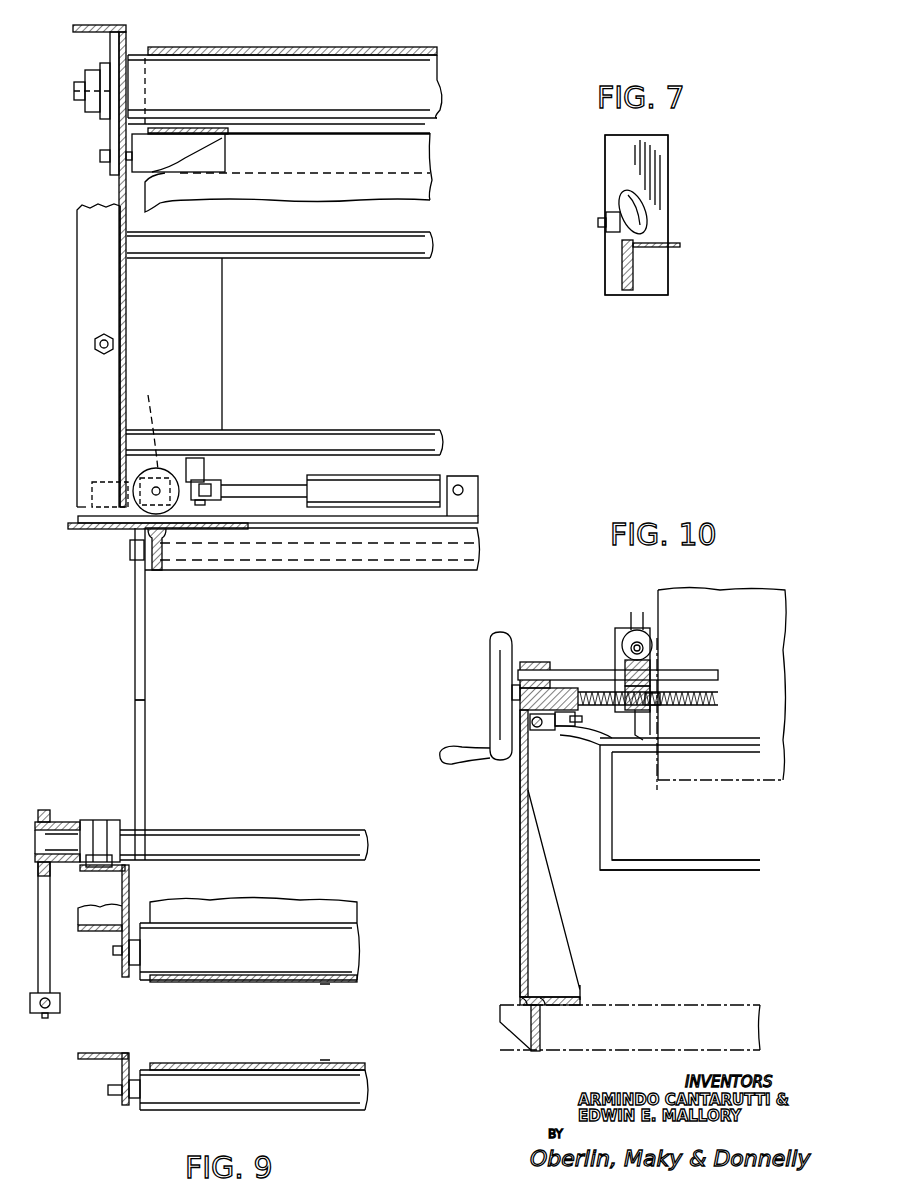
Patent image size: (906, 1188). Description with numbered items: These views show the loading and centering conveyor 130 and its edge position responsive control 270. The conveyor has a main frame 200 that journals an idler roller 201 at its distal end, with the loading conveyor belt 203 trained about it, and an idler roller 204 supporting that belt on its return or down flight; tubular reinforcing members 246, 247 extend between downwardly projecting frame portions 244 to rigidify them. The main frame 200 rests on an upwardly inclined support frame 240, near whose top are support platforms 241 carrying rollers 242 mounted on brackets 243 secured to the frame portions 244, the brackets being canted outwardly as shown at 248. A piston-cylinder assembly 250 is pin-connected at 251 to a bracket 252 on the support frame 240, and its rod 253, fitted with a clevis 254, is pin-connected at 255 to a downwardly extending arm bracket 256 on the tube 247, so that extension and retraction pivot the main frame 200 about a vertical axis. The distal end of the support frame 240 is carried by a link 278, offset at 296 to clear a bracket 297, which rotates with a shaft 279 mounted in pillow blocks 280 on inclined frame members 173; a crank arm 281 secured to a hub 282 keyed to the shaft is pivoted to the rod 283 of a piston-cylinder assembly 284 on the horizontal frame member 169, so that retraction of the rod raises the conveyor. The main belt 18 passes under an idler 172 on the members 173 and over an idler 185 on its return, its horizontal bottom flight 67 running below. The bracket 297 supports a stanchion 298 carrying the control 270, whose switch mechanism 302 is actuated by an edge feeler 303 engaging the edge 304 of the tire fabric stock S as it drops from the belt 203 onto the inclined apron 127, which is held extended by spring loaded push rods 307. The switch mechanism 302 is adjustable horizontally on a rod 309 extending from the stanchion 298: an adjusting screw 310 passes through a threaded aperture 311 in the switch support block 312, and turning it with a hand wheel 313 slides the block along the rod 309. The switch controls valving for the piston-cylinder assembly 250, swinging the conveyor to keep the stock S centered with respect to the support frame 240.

In FIG. 9, the loading conveyor 130 is at (57, 318).
In FIG. 10, the loading conveyor 130 is at (500, 812).
In FIG. 9, the main frame 200 is at (140, 36).
In FIG. 9, the idler roller 201 is at (437, 70).
In FIG. 9, the loading conveyor belt 203 is at (418, 186).
In FIG. 9, the idler roller 204 is at (200, 145).
In FIG. 9, the tubular reinforcing member 246 is at (375, 260).
In FIG. 9, the tubular reinforcing member 247 is at (412, 430).
In FIG. 9, the support platform 241 is at (102, 530).
In FIG. 7, the support platform 241 is at (668, 186).
In FIG. 9, the roller 242 is at (143, 485).
In FIG. 7, the roller 242 is at (642, 232).
In FIG. 9, the bracket 243 is at (105, 492).
In FIG. 7, the bracket 243 is at (620, 260).
In FIG. 9, the downwardly projecting frame portion 244 is at (84, 418).
In FIG. 7, the downwardly projecting frame portion 244 is at (635, 290).
In FIG. 9, the outward cant 248 is at (154, 421).
In FIG. 7, the outward cant 248 is at (612, 212).
In FIG. 9, the piston-cylinder assembly 250 is at (430, 473).
In FIG. 9, the pin connection 251 is at (464, 489).
In FIG. 9, the bracket 252 is at (470, 512).
In FIG. 9, the rod 253 is at (278, 488).
In FIG. 9, the clevis 254 is at (215, 500).
In FIG. 9, the pin connection 255 is at (210, 480).
In FIG. 9, the arm bracket 256 is at (203, 458).
In FIG. 9, the bracket 297 is at (163, 555).
In FIG. 10, the bracket 297 is at (545, 1032).
In FIG. 9, the support frame 240 is at (212, 572).
In FIG. 10, the support frame 240 is at (613, 1050).
In FIG. 9, the link 278 is at (152, 685).
In FIG. 9, the offset 296 is at (136, 712).
In FIG. 9, the shaft 279 is at (266, 830).
In FIG. 9, the pillow block 280 is at (112, 820).
In FIG. 9, the hub 282 is at (66, 822).
In FIG. 9, the crank arm 281 is at (50, 962).
In FIG. 9, the rod 283 is at (45, 1018).
In FIG. 9, the piston-cylinder assembly 284 is at (60, 1010).
In FIG. 9, the inclined frame member 173 is at (122, 970).
In FIG. 9, the idler 172 is at (352, 937).
In FIG. 9, the horizontal frame member 169 is at (135, 1058).
In FIG. 9, the idler 185 is at (327, 1110).
In FIG. 9, the horizontal bottom flight 67 is at (258, 1063).
In FIG. 9, the belt 18 is at (315, 985).
In FIG. 10, the edge position responsive control 270 is at (578, 635).
In FIG. 10, the switch mechanism 302 is at (650, 645).
In FIG. 10, the edge feeler 303 is at (655, 760).
In FIG. 10, the edge 304 is at (655, 832).
In FIG. 10, the spring loaded push rod 307 is at (540, 730).
In FIG. 10, the rod 309 is at (712, 672).
In FIG. 10, the adjusting screw 310 is at (718, 698).
In FIG. 10, the threaded aperture 311 is at (660, 700).
In FIG. 10, the switch support block 312 is at (620, 716).
In FIG. 10, the hand wheel 313 is at (492, 690).
In FIG. 10, the stanchion 298 is at (520, 945).
In FIG. 10, the inclined apron 127 is at (642, 866).
In FIG. 10, the tire fabric stock S is at (715, 600).